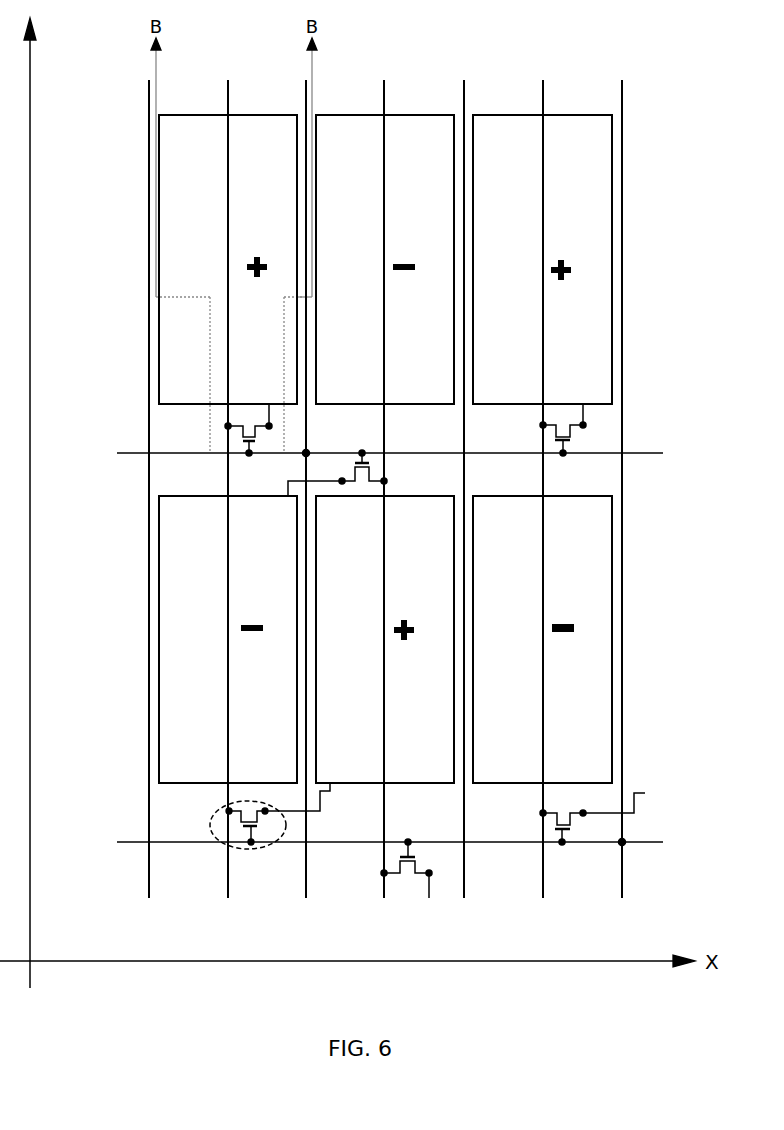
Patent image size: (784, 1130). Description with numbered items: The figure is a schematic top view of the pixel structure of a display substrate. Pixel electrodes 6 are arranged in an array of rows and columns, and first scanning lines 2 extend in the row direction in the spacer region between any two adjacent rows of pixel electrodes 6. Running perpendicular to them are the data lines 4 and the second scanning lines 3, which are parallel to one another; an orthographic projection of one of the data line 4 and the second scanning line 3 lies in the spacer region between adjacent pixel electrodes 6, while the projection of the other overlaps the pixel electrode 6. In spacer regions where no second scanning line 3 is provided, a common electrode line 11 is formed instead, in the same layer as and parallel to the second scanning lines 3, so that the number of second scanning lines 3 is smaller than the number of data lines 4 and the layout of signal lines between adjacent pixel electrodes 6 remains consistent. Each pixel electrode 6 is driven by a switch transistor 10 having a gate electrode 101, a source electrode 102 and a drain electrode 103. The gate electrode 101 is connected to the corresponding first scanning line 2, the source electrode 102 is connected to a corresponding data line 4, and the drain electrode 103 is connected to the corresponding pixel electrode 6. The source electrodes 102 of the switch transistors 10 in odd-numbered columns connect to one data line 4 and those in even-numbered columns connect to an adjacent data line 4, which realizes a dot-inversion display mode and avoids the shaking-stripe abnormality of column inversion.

The first scanning line 2 is at (130, 452).
The second scanning line 3 is at (307, 82).
The data line 4 is at (229, 82).
The pixel electrode 6 is at (197, 180).
The switch transistor 10 is at (267, 860).
The common electrode line 11 is at (465, 82).
The gate electrode 101 is at (251, 845).
The source electrode 102 is at (229, 811).
The drain electrode 103 is at (265, 811).